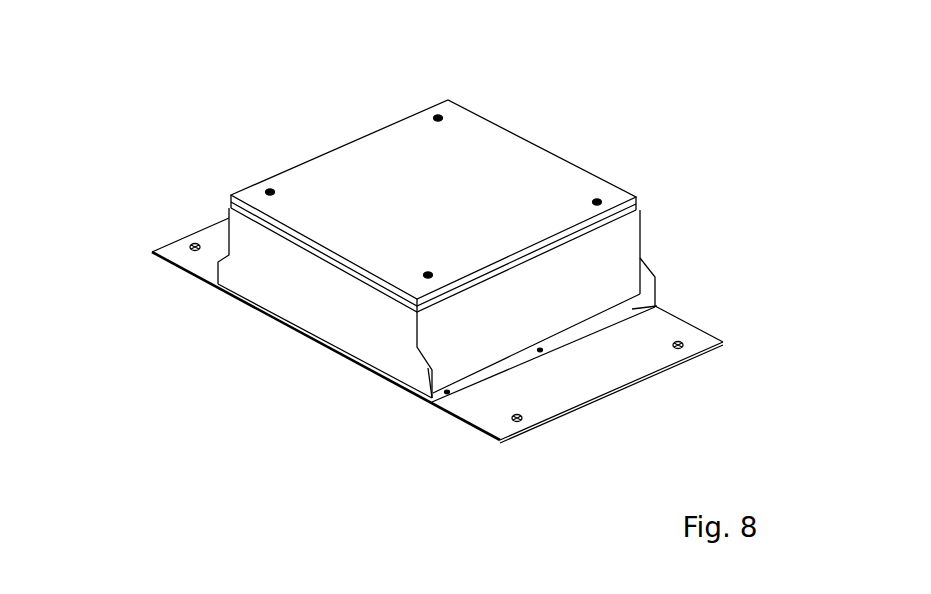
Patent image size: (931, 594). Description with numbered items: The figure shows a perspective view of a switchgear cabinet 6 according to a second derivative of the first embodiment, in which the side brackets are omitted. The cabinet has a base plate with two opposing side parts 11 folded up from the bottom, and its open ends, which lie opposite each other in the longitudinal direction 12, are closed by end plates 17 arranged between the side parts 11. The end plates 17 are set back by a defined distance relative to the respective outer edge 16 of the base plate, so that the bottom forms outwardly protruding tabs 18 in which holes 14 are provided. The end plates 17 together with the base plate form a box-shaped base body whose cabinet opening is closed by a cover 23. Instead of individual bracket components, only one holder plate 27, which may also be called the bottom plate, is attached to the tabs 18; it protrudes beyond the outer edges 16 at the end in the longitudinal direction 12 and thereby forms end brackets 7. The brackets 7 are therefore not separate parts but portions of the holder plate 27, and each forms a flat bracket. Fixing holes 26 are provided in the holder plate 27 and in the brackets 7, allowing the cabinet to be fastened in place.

The switchgear cabinet 6 is at (471, 269).
The cover 23 is at (515, 150).
The end brackets 7 is at (505, 428).
The fixing holes 26 is at (190, 246).
The holder plate 27 is at (197, 278).
The side parts 11 is at (296, 304).
The end plates 17 is at (628, 238).
The holes 14 is at (633, 312).
The outer edges 16 is at (530, 362).
The tabs 18 is at (467, 382).
The longitudinal direction 12 is at (432, 334).